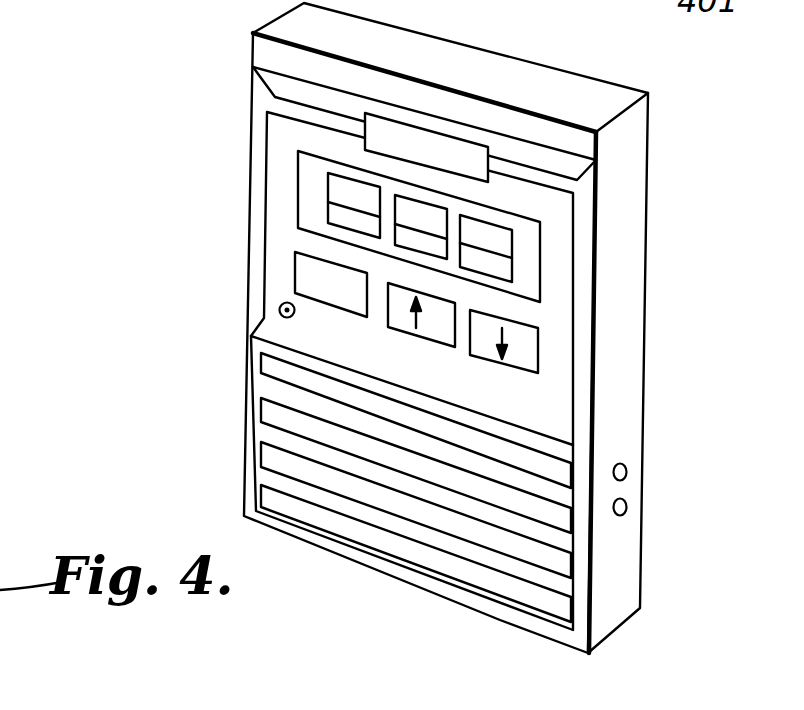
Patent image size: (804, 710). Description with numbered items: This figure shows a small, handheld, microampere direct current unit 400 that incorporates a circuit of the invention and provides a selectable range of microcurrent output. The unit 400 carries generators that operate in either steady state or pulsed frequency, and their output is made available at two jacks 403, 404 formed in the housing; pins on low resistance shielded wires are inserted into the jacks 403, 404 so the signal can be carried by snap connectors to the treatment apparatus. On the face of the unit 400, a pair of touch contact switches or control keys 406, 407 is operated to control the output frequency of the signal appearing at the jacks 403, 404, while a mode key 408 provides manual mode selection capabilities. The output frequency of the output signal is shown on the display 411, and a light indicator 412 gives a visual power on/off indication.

The handheld unit 400 is at (594, 86).
The jack 403 is at (627, 469).
The jack 404 is at (628, 507).
The touch contact switch 406 is at (394, 333).
The touch contact switch 407 is at (481, 358).
The mode key 408 is at (320, 310).
The display 411 is at (540, 266).
The light indicator 412 is at (279, 313).